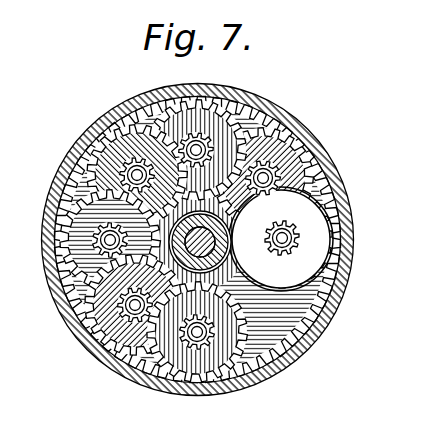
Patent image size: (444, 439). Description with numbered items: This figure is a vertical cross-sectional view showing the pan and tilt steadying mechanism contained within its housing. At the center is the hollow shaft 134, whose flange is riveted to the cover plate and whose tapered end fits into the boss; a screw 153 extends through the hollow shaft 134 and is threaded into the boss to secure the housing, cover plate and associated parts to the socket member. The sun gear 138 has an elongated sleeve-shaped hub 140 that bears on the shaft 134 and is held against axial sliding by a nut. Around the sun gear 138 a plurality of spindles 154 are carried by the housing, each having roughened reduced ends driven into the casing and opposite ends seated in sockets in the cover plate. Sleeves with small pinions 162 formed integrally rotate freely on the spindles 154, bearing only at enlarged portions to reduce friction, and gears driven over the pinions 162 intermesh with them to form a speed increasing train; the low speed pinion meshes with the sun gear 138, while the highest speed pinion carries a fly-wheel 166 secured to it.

The hollow shaft 134 is at (70, 318).
The sun gear 138 is at (249, 289).
The sleeve-shaped hub 140 is at (236, 278).
The screw 153 is at (221, 264).
The spindles 154 is at (196, 150).
The pinions 162 is at (263, 178).
The fly-wheel 166 is at (317, 270).